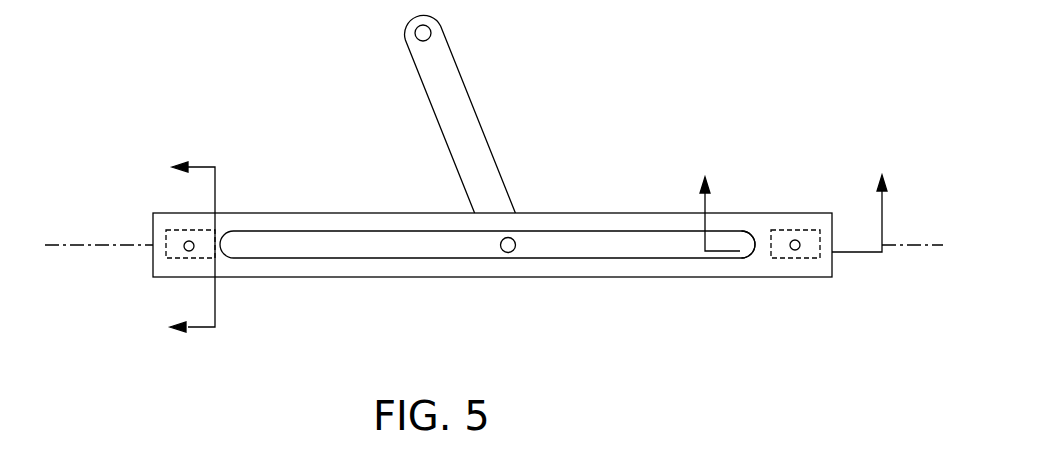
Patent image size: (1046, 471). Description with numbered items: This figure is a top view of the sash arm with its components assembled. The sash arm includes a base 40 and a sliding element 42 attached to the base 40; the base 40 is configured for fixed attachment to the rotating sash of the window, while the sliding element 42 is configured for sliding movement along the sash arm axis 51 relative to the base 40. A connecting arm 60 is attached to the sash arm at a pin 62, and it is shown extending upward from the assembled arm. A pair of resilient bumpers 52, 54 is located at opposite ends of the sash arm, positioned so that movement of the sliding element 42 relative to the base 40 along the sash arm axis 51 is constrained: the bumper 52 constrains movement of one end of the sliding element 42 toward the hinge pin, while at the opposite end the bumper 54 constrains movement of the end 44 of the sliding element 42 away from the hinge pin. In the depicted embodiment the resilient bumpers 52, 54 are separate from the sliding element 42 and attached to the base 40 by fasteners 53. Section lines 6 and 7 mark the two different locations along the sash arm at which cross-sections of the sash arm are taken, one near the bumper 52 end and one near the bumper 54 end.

The base 40 is at (612, 278).
The sliding element 42 is at (588, 228).
The end of sliding element 44 is at (755, 252).
The sash arm axis 51 is at (48, 244).
The resilient bumper 52 is at (182, 258).
The fasteners 53 is at (184, 245).
The resilient bumper 54 is at (805, 260).
The connecting arm 60 is at (473, 105).
The pin 62 is at (508, 252).
The cross-section location 6 is at (183, 246).
The cross-section location 7 is at (793, 197).